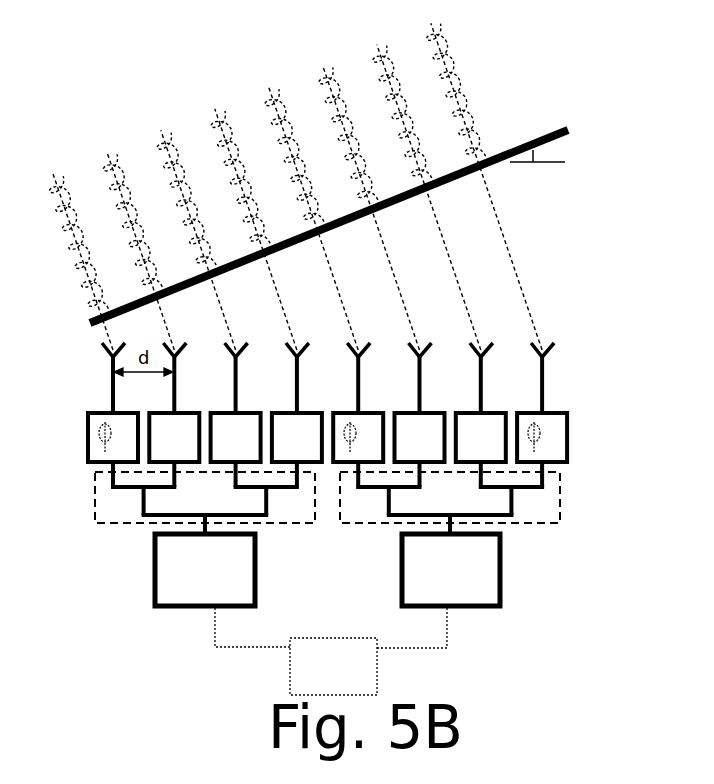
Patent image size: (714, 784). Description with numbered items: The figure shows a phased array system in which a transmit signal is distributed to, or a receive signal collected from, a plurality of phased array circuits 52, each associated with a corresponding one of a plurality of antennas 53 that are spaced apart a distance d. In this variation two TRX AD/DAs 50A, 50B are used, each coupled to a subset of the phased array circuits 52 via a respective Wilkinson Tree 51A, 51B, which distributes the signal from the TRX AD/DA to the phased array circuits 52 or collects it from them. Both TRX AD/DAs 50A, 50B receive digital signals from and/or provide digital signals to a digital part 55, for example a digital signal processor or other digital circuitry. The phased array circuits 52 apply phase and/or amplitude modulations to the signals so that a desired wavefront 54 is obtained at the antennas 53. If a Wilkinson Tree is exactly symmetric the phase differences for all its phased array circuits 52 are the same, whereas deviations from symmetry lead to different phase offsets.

The wavefront 54 is at (568, 132).
The antennas 53 is at (597, 391).
The phased array circuits 52 is at (595, 432).
The Wilkinson Tree 51A is at (95, 512).
The Wilkinson Tree 51B is at (562, 508).
The TRX AD/DA 50A is at (260, 580).
The TRX AD/DA 50B is at (505, 578).
The digital part 55 is at (290, 683).